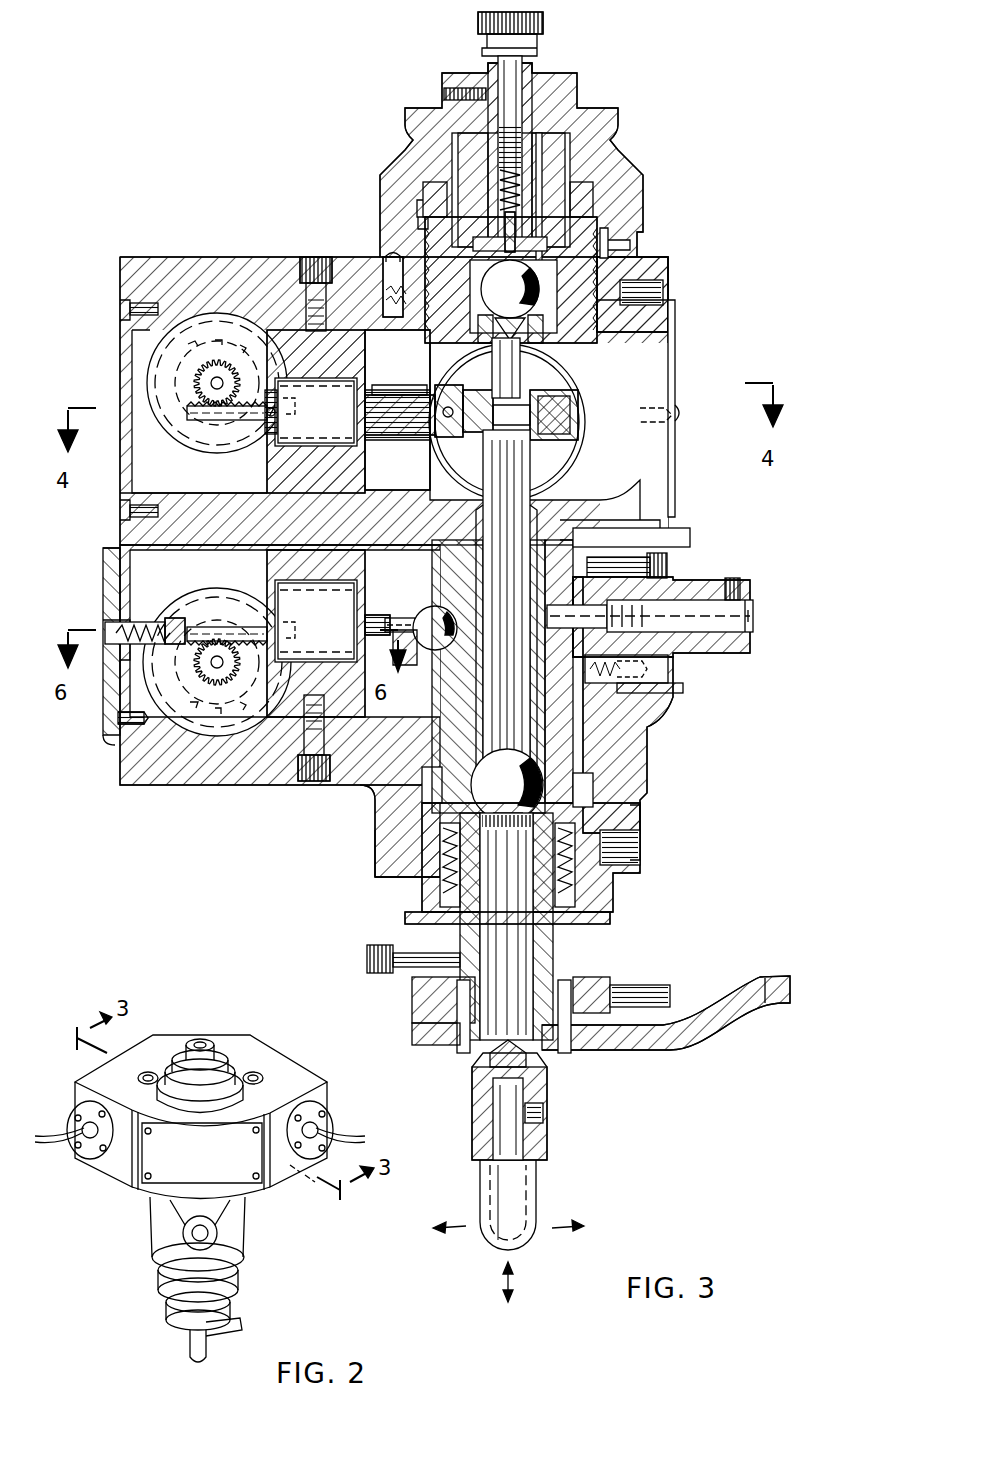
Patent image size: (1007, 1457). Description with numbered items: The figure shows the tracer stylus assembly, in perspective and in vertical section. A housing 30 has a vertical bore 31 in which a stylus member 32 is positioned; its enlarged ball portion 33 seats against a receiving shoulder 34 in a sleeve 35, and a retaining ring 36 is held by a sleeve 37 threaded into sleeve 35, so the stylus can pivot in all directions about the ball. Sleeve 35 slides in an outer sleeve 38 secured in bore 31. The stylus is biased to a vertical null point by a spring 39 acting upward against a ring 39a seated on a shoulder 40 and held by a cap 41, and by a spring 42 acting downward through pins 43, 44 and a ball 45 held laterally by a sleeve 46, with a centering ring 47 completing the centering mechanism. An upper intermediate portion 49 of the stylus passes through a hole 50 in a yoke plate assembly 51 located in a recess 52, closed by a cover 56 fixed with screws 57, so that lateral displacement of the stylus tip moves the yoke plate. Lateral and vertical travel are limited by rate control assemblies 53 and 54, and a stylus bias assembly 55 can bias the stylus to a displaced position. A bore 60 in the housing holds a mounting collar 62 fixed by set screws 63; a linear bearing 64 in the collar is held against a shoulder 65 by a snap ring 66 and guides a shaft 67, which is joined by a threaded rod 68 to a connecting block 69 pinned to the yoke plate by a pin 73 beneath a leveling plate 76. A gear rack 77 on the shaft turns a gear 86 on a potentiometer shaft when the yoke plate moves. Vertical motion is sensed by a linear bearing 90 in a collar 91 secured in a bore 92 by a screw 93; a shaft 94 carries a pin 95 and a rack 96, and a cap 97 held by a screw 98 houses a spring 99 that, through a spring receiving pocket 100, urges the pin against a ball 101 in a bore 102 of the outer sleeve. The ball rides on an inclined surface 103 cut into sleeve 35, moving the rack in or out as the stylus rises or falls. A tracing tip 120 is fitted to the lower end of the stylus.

The housing 30 is at (195, 785).
The vertical bore 31 is at (590, 785).
The stylus member 32 is at (552, 1085).
The enlarged ball portion 33 is at (522, 785).
The receiving shoulder 34 is at (375, 835).
The sleeve 35 is at (365, 790).
The retaining ring 36 is at (507, 800).
The sleeve 37 is at (460, 930).
The outer sleeve 38 is at (630, 730).
The spring 39 is at (580, 890).
The ring 39a is at (620, 865).
The shoulder 40 is at (615, 820).
The cap 41 is at (610, 920).
The spring 42 is at (520, 182).
The pin 43 is at (518, 238).
The pin 44 is at (520, 372).
The ball 45 is at (520, 302).
The sleeve 46 is at (392, 256).
The centering ring 47 is at (660, 262).
The upper intermediate portion 49 is at (560, 404).
The hole 50 is at (550, 470).
The yoke plate assembly 51 is at (560, 412).
The recess 52 is at (668, 362).
The rate control assembly 53 is at (583, 70).
The rate control assembly 54 is at (755, 588).
The stylus bias assembly 55 is at (672, 970).
The cover 56 is at (668, 316).
The screws 57 is at (685, 415).
The bore 60 is at (135, 478).
The mounting collar 62 is at (270, 470).
The set screws 63 is at (316, 256).
The linear bearing 64 is at (316, 412).
The shoulder 65 is at (392, 390).
The snap ring 66 is at (262, 437).
The shaft 67 is at (412, 388).
The threaded rod 68 is at (390, 430).
The connecting block 69 is at (418, 445).
The pin 73 is at (448, 425).
The leveling plate 76 is at (480, 383).
The gear rack 77 is at (200, 408).
The gear 86 is at (190, 372).
The linear bearing 90 is at (355, 592).
The collar 91 is at (355, 563).
The bore 92 is at (135, 567).
The screw 93 is at (300, 770).
The shaft 94 is at (378, 616).
The pin 95 is at (412, 630).
The rack 96 is at (212, 625).
The cap 97 is at (115, 650).
The screw 98 is at (115, 722).
The spring 99 is at (120, 622).
The spring receiving pocket 100 is at (172, 616).
The ball 101 is at (436, 628).
The bore 102 is at (405, 668).
The inclined surface 103 is at (475, 660).
The tracing tip 120 is at (540, 1185).